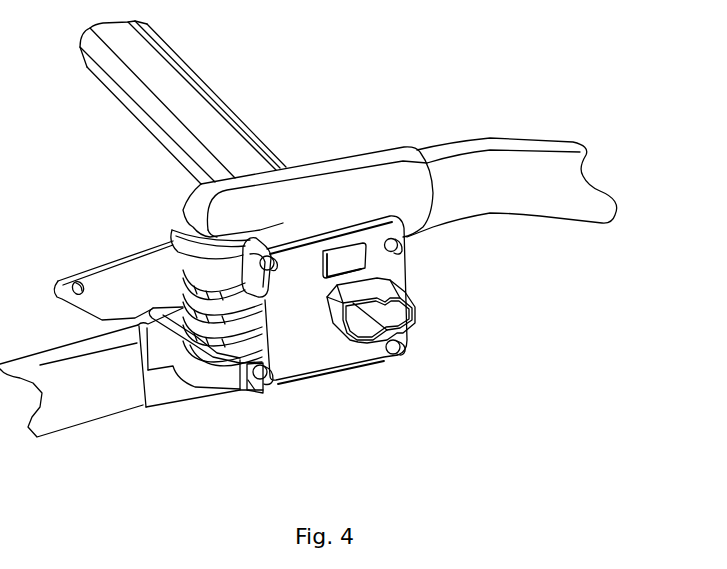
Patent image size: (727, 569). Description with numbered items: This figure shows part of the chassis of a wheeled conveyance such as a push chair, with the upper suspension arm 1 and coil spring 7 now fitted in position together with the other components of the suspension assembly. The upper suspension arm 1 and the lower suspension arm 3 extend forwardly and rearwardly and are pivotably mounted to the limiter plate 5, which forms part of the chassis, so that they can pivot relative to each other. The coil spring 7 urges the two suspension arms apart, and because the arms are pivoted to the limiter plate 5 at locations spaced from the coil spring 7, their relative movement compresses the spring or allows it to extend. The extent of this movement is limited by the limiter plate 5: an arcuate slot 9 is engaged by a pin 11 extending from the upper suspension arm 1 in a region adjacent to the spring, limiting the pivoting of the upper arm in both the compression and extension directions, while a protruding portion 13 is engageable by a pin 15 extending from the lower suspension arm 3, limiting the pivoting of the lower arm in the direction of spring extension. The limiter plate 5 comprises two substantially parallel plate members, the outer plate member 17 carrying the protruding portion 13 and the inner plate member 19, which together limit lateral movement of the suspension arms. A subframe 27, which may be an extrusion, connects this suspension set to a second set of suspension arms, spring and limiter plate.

The upper suspension arm 1 is at (540, 217).
The lower suspension arm 3 is at (128, 407).
The limiter plate 5 is at (403, 257).
The coil spring 7 is at (180, 303).
The arcuate slot 9 is at (263, 265).
The pin 11 is at (265, 238).
The protruding portion 13 is at (268, 390).
The pin 15 is at (245, 393).
The outer plate member 17 is at (333, 360).
The inner plate member 19 is at (100, 258).
The subframe 27 is at (216, 92).